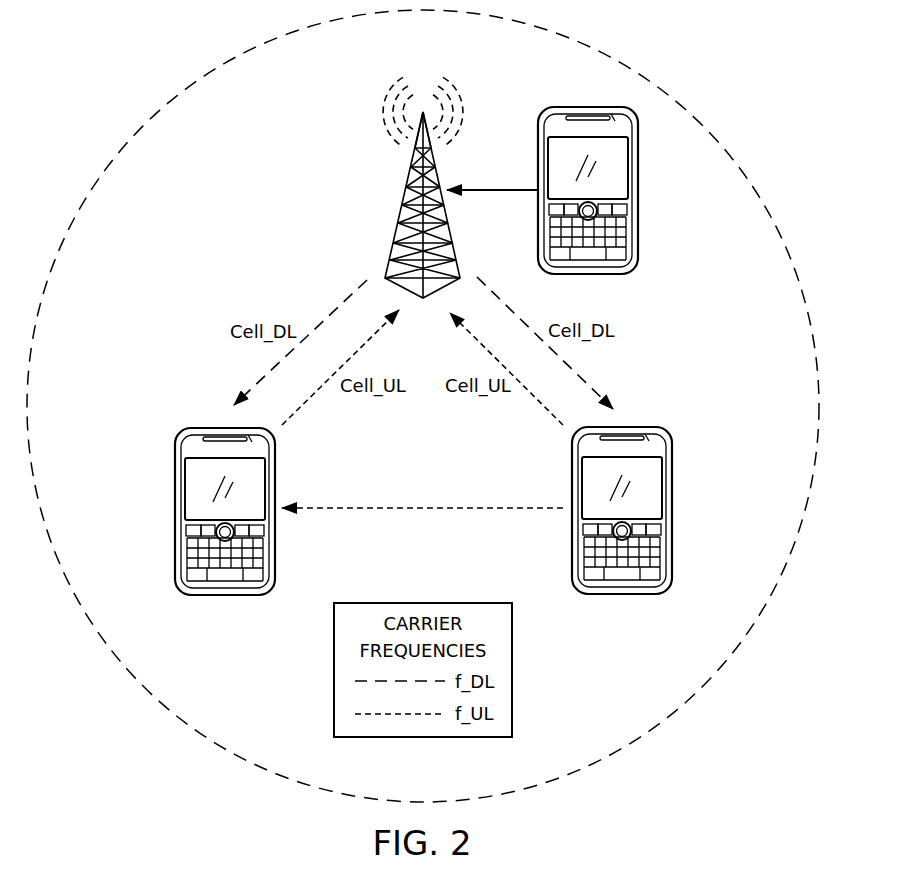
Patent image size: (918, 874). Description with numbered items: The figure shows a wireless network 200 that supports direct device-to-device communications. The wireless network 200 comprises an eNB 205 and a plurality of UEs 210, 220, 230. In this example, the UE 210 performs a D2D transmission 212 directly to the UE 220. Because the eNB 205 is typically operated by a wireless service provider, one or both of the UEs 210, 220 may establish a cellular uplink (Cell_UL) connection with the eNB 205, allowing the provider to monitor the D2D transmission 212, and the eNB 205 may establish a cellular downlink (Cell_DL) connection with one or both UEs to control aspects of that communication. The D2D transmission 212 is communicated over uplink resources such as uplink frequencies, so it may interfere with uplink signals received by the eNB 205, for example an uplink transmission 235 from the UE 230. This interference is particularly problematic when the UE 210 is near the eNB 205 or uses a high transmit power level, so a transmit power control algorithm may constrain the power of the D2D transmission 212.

The wireless network 200 is at (184, 84).
The eNB 205 is at (401, 207).
The UE 210 is at (621, 595).
The D2D transmission 212 is at (427, 510).
The UE 220 is at (224, 597).
The UE 230 is at (640, 180).
The uplink transmission 235 is at (490, 188).